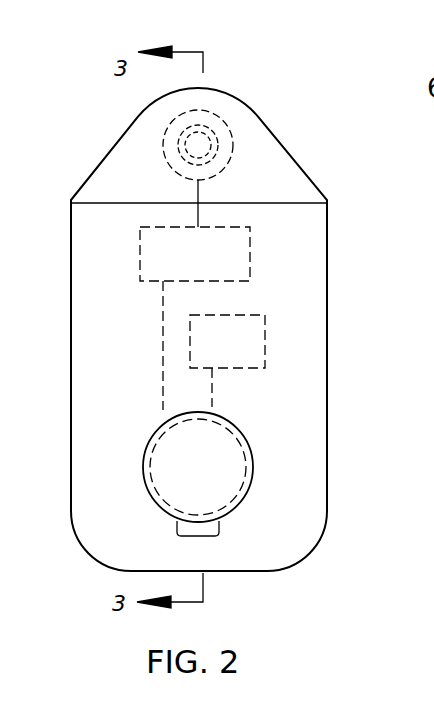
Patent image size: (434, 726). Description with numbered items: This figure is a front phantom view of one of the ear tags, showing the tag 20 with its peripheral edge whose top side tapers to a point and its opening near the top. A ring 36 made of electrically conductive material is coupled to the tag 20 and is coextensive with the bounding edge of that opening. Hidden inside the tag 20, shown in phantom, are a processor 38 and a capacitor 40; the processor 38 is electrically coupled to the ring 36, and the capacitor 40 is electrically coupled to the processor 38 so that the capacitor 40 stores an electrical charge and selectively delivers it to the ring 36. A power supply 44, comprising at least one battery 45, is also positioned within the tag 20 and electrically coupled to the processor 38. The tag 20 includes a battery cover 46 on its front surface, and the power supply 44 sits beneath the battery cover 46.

The tag 20 is at (82, 542).
The ring 36 is at (232, 135).
The processor 38 is at (248, 253).
The capacitor 40 is at (265, 342).
The power supply 44 is at (242, 492).
The battery 45 is at (250, 455).
The battery cover 46 is at (227, 515).